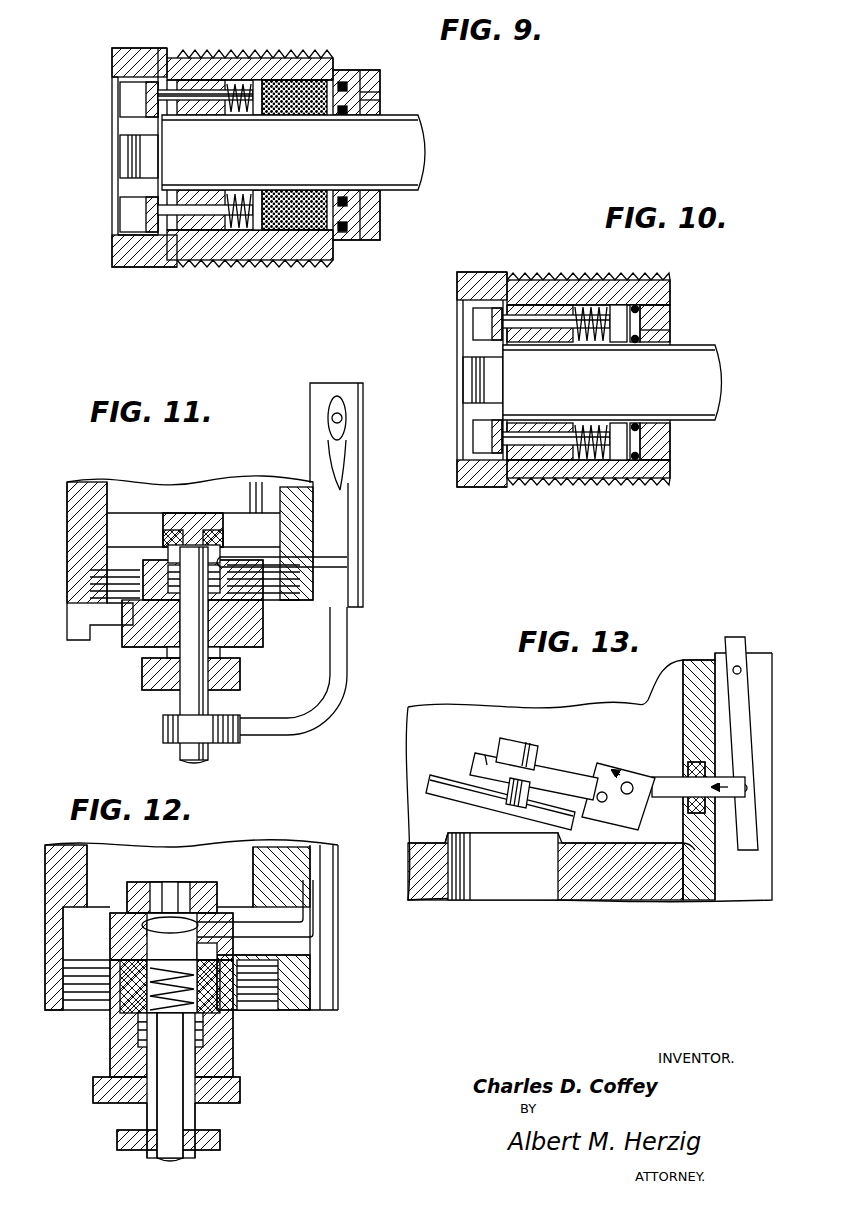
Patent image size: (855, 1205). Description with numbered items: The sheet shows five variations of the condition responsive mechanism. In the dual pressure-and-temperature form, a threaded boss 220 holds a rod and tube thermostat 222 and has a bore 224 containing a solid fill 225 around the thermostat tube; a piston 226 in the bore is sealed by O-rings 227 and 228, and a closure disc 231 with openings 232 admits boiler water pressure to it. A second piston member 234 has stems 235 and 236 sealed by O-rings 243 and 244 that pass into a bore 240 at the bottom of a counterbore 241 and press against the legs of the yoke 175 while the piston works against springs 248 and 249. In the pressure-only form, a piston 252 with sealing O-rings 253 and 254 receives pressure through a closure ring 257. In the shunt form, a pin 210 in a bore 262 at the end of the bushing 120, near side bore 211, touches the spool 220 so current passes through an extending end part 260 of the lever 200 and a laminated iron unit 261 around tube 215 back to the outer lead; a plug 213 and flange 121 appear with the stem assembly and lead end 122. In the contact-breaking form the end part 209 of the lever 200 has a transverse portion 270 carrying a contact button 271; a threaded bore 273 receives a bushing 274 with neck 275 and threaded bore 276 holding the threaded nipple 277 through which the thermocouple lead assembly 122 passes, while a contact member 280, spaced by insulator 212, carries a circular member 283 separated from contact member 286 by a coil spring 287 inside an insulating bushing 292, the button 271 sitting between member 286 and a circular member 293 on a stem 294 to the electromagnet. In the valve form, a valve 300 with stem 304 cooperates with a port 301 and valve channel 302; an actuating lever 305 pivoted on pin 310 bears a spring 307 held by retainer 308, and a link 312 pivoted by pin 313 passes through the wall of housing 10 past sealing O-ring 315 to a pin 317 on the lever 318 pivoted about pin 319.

In FIG. 13, the housing 10 is at (682, 903).
In FIG. 11, the bushing 120 is at (253, 592).
In FIG. 11, the flange 121 is at (227, 663).
In FIG. 11, the thermocouple lead assembly 122 is at (207, 761).
In FIG. 12, the thermocouple lead assembly 122 is at (183, 1158).
In FIG. 9, the yoke 175 is at (130, 100).
In FIG. 10, the yoke 175 is at (480, 333).
In FIG. 11, the lever 200 is at (347, 388).
In FIG. 11, the end part 209 is at (343, 523).
In FIG. 12, the end part 209 is at (315, 890).
In FIG. 11, the pin 210 is at (262, 520).
In FIG. 11, the side bore 211 is at (343, 558).
In FIG. 11, the insulator 212 is at (257, 588).
In FIG. 12, the insulator 212 is at (150, 1038).
In FIG. 11, the plug 213 is at (175, 514).
In FIG. 11, the tube 215 is at (177, 698).
In FIG. 9, the threaded boss 220 is at (322, 48).
In FIG. 10, the threaded boss 220 is at (627, 286).
In FIG. 11, the threaded boss 220 is at (180, 582).
In FIG. 9, the rod and tube thermostat 222 is at (408, 155).
In FIG. 10, the rod and tube thermostat 222 is at (700, 424).
In FIG. 9, the bore 224 is at (318, 80).
In FIG. 10, the bore 224 is at (605, 303).
In FIG. 9, the solid fill 225 is at (293, 228).
In FIG. 9, the piston 226 is at (345, 82).
In FIG. 9, the O-ring 227 is at (343, 200).
In FIG. 9, the O-ring 228 is at (342, 231).
In FIG. 9, the closure disc 231 is at (380, 80).
In FIG. 9, the openings 232 is at (380, 105).
In FIG. 9, the piston member 234 is at (255, 229).
In FIG. 9, the stem 235 is at (205, 93).
In FIG. 10, the stem 235 is at (523, 322).
In FIG. 9, the stem 236 is at (203, 213).
In FIG. 10, the stem 236 is at (530, 440).
In FIG. 9, the bore 240 is at (165, 48).
In FIG. 9, the counterbore 241 is at (113, 77).
In FIG. 9, the O-ring 243 is at (180, 50).
In FIG. 9, the O-ring 244 is at (177, 232).
In FIG. 9, the spring 248 is at (242, 83).
In FIG. 10, the spring 248 is at (587, 305).
In FIG. 9, the spring 249 is at (240, 230).
In FIG. 10, the spring 249 is at (583, 455).
In FIG. 10, the piston 252 is at (653, 327).
In FIG. 10, the sealing O-ring 253 is at (638, 306).
In FIG. 10, the sealing O-ring 254 is at (635, 456).
In FIG. 10, the closure ring 257 is at (672, 312).
In FIG. 11, the extending end part 260 is at (347, 690).
In FIG. 11, the laminated iron unit 261 is at (220, 714).
In FIG. 11, the bore 262 is at (97, 557).
In FIG. 12, the transverse portion 270 is at (287, 933).
In FIG. 12, the contact button 271 is at (163, 942).
In FIG. 12, the threaded bore 273 is at (73, 987).
In FIG. 12, the bushing 274 is at (227, 1010).
In FIG. 12, the extending neck 275 is at (112, 1065).
In FIG. 12, the threaded bore 276 is at (137, 1083).
In FIG. 12, the threaded nipple 277 is at (147, 1118).
In FIG. 12, the contact member 280 is at (197, 1035).
In FIG. 12, the circular member 283 is at (153, 1012).
In FIG. 12, the contact member 286 is at (170, 983).
In FIG. 12, the coil spring 287 is at (240, 992).
In FIG. 12, the insulating bushing 292 is at (213, 958).
In FIG. 12, the circular member 293 is at (153, 905).
In FIG. 12, the stem 294 is at (172, 888).
In FIG. 13, the valve 300 is at (455, 775).
In FIG. 13, the port 301 is at (445, 838).
In FIG. 13, the valve channel 302 is at (552, 895).
In FIG. 13, the stem 304 is at (517, 740).
In FIG. 13, the actuating lever 305 is at (552, 768).
In FIG. 13, the spring 307 is at (527, 802).
In FIG. 13, the retainer 308 is at (490, 757).
In FIG. 13, the pin 310 is at (602, 803).
In FIG. 13, the link 312 is at (668, 777).
In FIG. 13, the pin 313 is at (632, 793).
In FIG. 13, the sealing O-ring 315 is at (687, 843).
In FIG. 13, the pin 317 is at (740, 803).
In FIG. 13, the lever 318 is at (738, 718).
In FIG. 13, the pin 319 is at (742, 650).